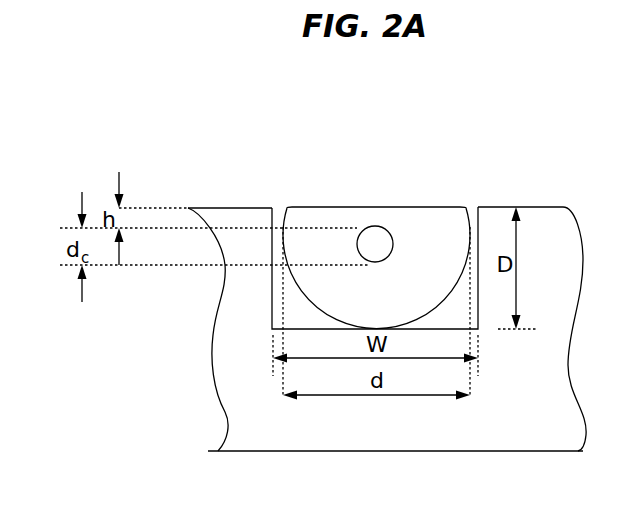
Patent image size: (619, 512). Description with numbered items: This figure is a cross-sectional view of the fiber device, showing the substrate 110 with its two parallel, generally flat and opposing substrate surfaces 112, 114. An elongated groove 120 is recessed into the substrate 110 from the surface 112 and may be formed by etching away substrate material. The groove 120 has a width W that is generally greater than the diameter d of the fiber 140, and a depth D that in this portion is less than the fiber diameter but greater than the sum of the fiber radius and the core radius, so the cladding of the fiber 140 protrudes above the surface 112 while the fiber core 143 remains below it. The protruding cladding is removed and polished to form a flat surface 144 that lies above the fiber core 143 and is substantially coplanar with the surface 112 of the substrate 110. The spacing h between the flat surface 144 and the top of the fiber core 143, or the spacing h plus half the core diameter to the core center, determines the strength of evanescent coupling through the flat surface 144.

The substrate 110 is at (361, 320).
The substrate surface 112 is at (205, 208).
The substrate surface 114 is at (515, 451).
The groove 120 is at (278, 226).
The fiber 140 is at (416, 242).
The fiber core 143 is at (375, 253).
The flat surface 144 is at (392, 206).